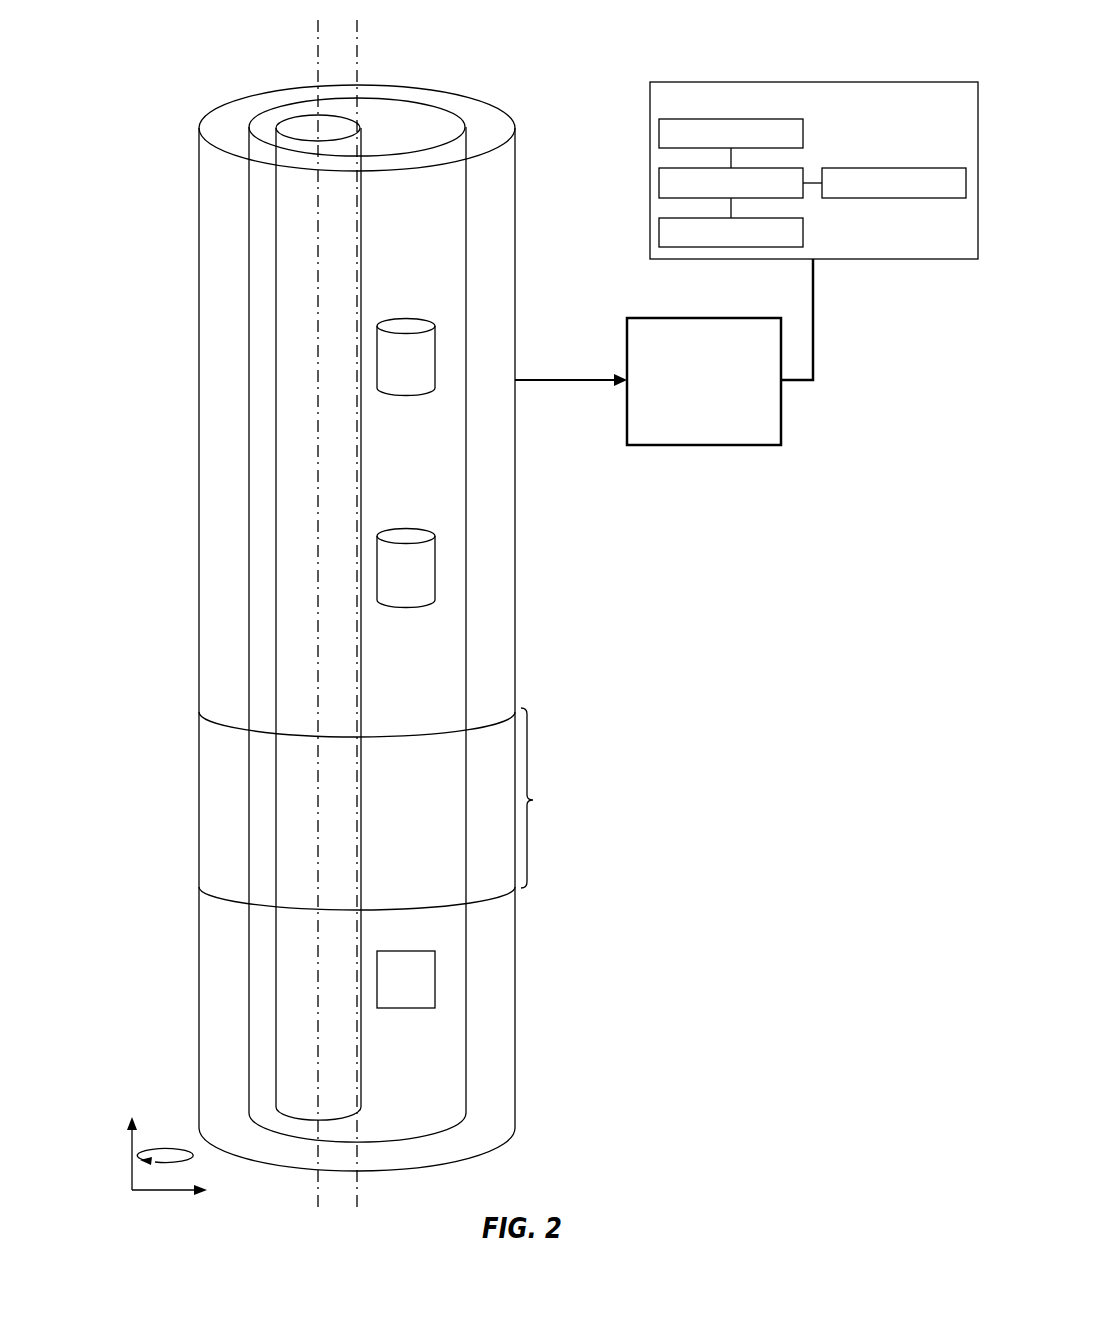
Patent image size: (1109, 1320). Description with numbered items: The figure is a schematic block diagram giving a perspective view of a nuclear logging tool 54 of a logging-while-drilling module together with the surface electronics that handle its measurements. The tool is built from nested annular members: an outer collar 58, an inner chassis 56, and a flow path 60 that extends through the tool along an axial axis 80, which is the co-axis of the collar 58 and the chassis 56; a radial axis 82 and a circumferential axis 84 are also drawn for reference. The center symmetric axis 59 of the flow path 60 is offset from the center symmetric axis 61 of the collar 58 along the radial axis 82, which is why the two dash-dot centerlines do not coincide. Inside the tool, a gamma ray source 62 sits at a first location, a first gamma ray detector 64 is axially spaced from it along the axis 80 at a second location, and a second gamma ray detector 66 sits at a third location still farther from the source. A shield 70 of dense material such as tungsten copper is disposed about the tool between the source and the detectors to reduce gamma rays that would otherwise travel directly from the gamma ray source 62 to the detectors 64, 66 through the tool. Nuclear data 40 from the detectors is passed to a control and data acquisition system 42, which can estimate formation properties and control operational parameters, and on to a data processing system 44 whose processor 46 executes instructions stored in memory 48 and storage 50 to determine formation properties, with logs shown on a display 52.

The data 40 is at (555, 383).
The control and data acquisition system 42 is at (705, 318).
The data processing system 44 is at (813, 82).
The processor 46 is at (659, 181).
The memory 48 is at (659, 131).
The storage 50 is at (803, 232).
The display 52 is at (896, 168).
The nuclear logging tool 54 is at (278, 27).
The chassis 56 is at (465, 648).
The collar 58 is at (199, 275).
The center symmetric axis of the flow path 59 is at (318, 68).
The flow path 60 is at (277, 452).
The center symmetric axis of the collar 61 is at (357, 45).
The gamma ray source 62 is at (435, 978).
The first gamma ray detector 64 is at (435, 568).
The second gamma ray detector 66 is at (435, 357).
The shield 70 is at (533, 800).
The axial axis 80 is at (135, 1155).
The radial axis 82 is at (165, 1188).
The circumferential axis 84 is at (120, 1162).